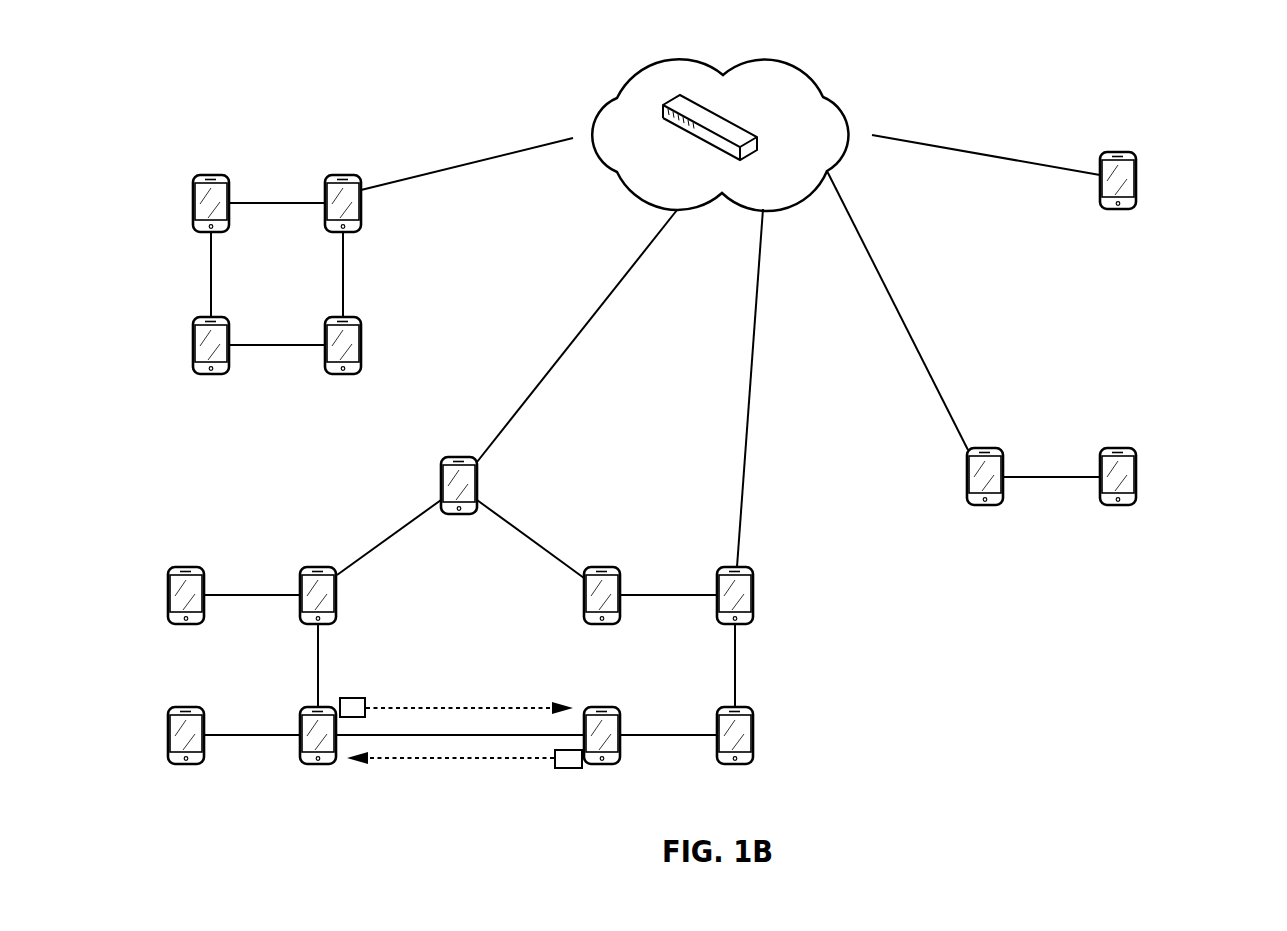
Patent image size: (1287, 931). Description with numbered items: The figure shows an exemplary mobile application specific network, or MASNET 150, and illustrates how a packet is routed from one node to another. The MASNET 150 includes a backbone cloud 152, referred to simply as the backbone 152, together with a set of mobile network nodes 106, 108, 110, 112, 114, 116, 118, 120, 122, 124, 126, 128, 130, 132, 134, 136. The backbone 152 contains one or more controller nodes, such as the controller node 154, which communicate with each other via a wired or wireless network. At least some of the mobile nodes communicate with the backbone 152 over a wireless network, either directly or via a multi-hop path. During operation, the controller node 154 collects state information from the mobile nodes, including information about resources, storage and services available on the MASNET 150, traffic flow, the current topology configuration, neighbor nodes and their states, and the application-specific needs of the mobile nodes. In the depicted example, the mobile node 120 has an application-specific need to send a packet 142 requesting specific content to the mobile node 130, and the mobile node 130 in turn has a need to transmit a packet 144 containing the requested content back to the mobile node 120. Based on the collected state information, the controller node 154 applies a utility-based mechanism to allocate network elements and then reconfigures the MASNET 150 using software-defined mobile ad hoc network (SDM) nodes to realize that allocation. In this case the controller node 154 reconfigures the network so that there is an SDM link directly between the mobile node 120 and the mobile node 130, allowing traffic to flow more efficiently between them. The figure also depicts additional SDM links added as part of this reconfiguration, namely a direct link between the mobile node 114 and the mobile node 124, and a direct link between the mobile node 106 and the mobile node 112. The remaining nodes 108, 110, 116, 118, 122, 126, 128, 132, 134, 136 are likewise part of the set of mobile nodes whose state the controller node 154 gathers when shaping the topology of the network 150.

The mobile network node 106 is at (216, 232).
The mobile network node 108 is at (350, 232).
The mobile network node 110 is at (348, 374).
The mobile network node 112 is at (216, 374).
The mobile network node 114 is at (441, 477).
The mobile network node 116 is at (191, 624).
The mobile network node 118 is at (323, 624).
The mobile network node 120 is at (323, 764).
The mobile network node 122 is at (191, 764).
The mobile network node 124 is at (607, 624).
The mobile network node 126 is at (740, 624).
The mobile network node 128 is at (740, 764).
The mobile network node 130 is at (607, 764).
The mobile network node 132 is at (990, 505).
The mobile network node 134 is at (1123, 505).
The mobile network node 136 is at (1123, 209).
The packet 142 is at (349, 698).
The packet 144 is at (565, 769).
The mobile application specific network (MASNET) 150 is at (1197, 46).
The backbone cloud 152 is at (822, 88).
The controller node 154 is at (697, 143).